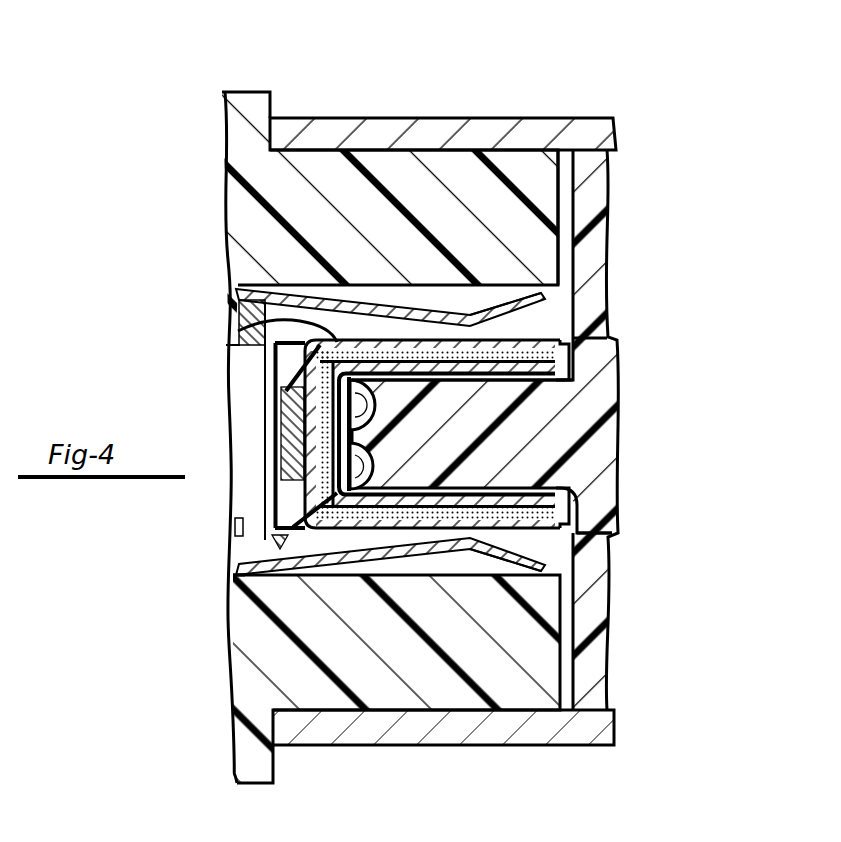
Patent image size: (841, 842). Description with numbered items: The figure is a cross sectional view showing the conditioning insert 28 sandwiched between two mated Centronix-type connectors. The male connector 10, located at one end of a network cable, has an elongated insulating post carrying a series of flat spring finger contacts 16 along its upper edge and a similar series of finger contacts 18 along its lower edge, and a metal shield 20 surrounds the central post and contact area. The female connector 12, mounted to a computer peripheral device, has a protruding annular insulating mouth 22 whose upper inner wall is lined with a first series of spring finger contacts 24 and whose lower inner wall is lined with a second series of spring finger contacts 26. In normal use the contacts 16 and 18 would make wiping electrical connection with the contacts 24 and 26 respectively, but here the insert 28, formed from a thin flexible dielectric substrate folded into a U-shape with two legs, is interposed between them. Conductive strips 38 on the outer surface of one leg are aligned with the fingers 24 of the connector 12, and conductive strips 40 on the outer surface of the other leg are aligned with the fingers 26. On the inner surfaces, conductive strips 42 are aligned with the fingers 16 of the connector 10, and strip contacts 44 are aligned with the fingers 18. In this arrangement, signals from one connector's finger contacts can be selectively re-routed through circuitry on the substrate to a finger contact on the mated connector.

The male Centronix-type connector 10 is at (555, 425).
The female Centronix-type connector 12 is at (247, 206).
The spring finger contacts 16 is at (568, 343).
The finger contacts 18 is at (555, 470).
The metal shield 20 is at (408, 128).
The annular insulating mouth 22 is at (543, 185).
The spring finger contacts 24 is at (477, 310).
The spring finger contacts 26 is at (445, 555).
The conditioning insert 28 is at (233, 580).
The conductive strips 38 is at (238, 331).
The conductive strips 40 is at (510, 540).
The conductive strips 42 is at (545, 337).
The strip contacts 44 is at (612, 534).